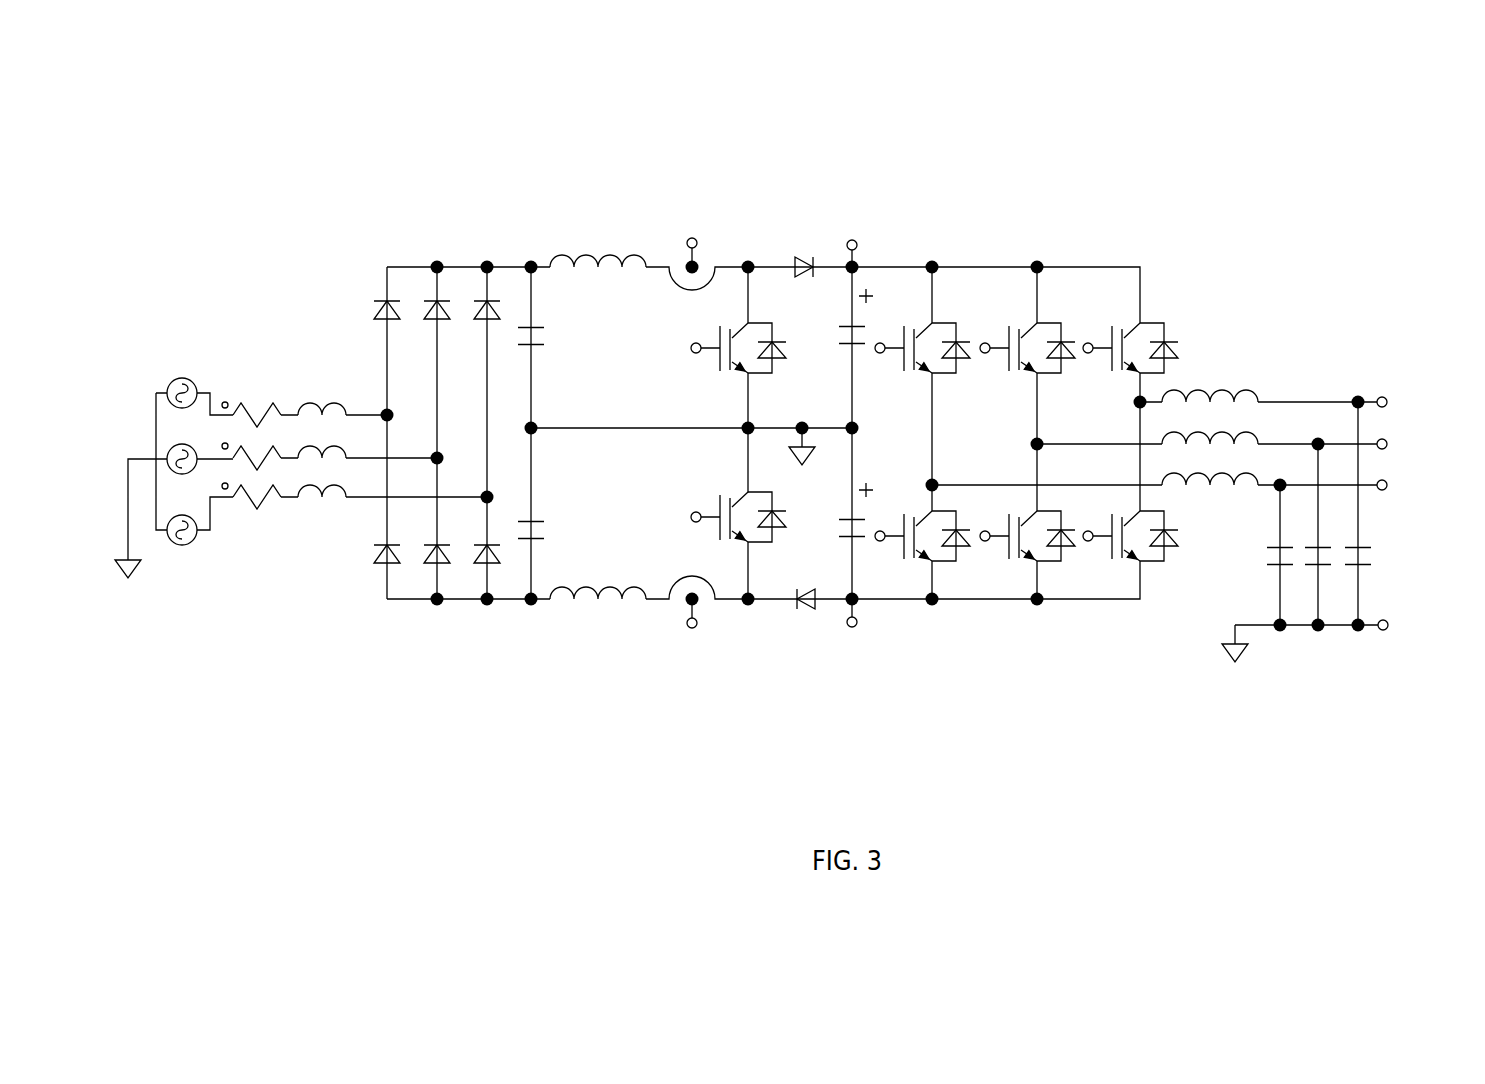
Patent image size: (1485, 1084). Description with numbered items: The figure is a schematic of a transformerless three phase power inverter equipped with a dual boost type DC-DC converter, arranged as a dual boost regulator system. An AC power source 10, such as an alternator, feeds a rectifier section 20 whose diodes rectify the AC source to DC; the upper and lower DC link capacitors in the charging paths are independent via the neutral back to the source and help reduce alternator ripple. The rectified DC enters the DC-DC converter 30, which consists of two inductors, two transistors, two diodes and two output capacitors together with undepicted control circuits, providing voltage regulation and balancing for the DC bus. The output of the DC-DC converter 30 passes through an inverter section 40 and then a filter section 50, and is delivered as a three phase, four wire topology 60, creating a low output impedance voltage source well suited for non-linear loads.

The AC power source 10 is at (117, 670).
The rectifier section 20 is at (522, 670).
The DC-DC converter 30 is at (533, 670).
The inverter section 40 is at (925, 670).
The filter section 50 is at (1195, 670).
The 3 phase 4 wire topology 60 is at (1392, 345).